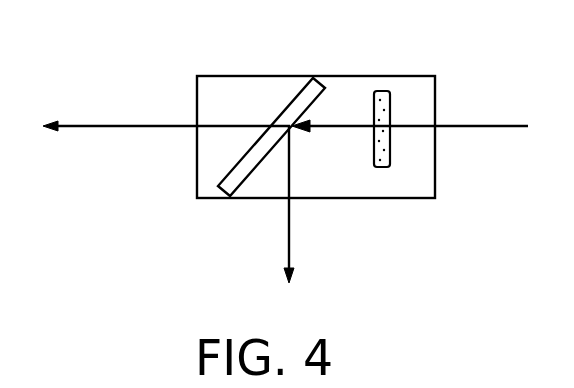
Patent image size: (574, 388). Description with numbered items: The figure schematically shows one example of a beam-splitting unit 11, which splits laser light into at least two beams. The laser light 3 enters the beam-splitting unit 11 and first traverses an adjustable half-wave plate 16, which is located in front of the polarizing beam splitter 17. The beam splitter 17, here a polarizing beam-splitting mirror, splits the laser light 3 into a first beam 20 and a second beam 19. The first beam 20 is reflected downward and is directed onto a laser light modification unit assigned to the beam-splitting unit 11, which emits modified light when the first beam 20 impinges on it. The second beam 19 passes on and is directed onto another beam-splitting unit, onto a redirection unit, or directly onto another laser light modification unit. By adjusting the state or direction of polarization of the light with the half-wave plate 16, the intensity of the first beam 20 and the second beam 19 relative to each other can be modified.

The laser light 3 is at (501, 125).
The beam-splitting unit 11 is at (349, 76).
The adjustable half-wave plate 16 is at (382, 167).
The beam splitter 17 is at (293, 97).
The second beam 19 is at (127, 125).
The first beam 20 is at (288, 250).